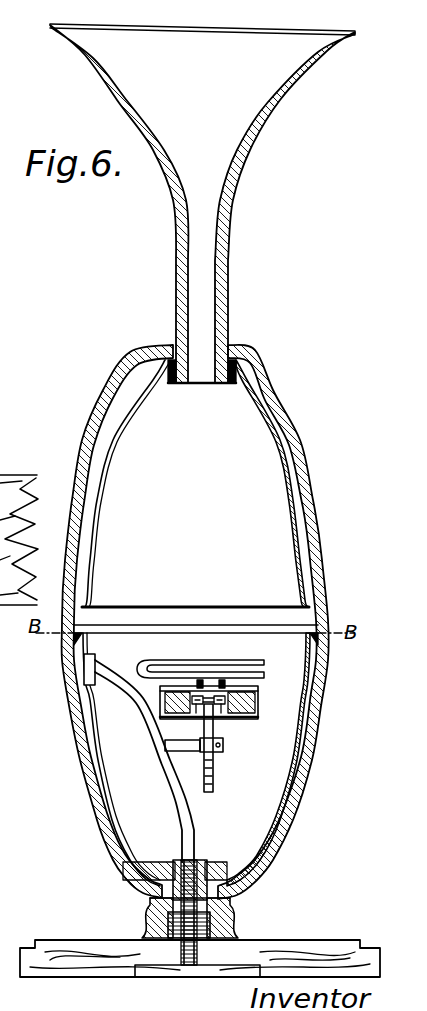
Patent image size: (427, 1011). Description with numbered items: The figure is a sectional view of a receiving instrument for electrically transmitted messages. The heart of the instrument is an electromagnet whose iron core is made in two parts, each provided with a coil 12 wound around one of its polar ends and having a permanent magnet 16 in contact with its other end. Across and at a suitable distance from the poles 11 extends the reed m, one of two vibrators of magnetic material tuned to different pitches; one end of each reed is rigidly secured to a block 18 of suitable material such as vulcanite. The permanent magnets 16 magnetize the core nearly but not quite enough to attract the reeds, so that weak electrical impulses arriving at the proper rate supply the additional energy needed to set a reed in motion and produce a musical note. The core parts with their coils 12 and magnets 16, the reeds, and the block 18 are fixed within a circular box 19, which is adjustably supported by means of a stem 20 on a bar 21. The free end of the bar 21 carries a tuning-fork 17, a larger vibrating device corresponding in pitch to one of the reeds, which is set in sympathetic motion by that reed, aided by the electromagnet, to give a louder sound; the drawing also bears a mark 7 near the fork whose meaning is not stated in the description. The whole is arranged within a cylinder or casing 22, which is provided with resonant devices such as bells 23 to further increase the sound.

The tuning fork 7 is at (200, 685).
The tuning-fork 17 is at (224, 676).
The reed m is at (222, 690).
The block 18 is at (165, 699).
The coil 12 is at (259, 693).
The circular box 19 is at (258, 705).
The poles 11 is at (199, 708).
The permanent magnet 16 is at (165, 718).
The stem 20 is at (214, 778).
The bar 21 is at (174, 790).
The casing 22 is at (322, 606).
The bell 23 is at (292, 523).